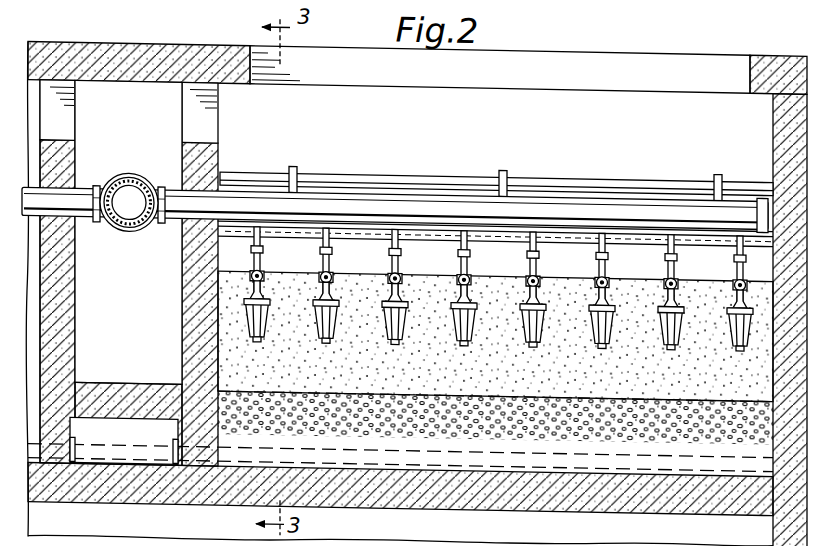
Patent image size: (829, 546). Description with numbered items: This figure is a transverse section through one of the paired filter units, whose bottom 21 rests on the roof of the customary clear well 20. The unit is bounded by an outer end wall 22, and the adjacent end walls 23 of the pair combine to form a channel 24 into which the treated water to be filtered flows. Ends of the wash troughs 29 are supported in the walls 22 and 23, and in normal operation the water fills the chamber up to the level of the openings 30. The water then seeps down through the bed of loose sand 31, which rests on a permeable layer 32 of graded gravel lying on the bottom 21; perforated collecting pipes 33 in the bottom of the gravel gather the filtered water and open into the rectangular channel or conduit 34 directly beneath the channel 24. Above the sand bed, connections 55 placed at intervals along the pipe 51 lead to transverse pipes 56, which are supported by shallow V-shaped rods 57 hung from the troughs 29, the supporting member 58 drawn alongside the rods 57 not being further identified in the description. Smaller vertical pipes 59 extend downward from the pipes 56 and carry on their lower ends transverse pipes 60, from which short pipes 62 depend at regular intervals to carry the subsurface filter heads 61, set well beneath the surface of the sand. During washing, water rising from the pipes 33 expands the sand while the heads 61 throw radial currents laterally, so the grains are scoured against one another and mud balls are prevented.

The clear well 20 is at (400, 525).
The bottom of the filter units 21 is at (412, 493).
The outer end wall 22 is at (776, 138).
The adjacent end wall 23 is at (190, 318).
The channel 24 is at (128, 415).
The wash trough 29 is at (280, 226).
The opening 30 is at (70, 114).
The bed of loose sand 31 is at (569, 278).
The permeable layer 32 is at (495, 420).
The perforated collecting pipe 33 is at (76, 448).
The rectangular channel or conduit 34 is at (124, 440).
The pipe 51 is at (157, 184).
The connection 55 is at (146, 230).
The transverse pipe 56 is at (606, 196).
The shallow V-shaped rod 57 is at (320, 170).
The hanger bar 58 is at (288, 165).
The smaller vertical pipe 59 is at (391, 256).
The transverse pipe 60 is at (530, 270).
The subsurface filter head 61 is at (651, 310).
The short pipe 62 is at (251, 283).